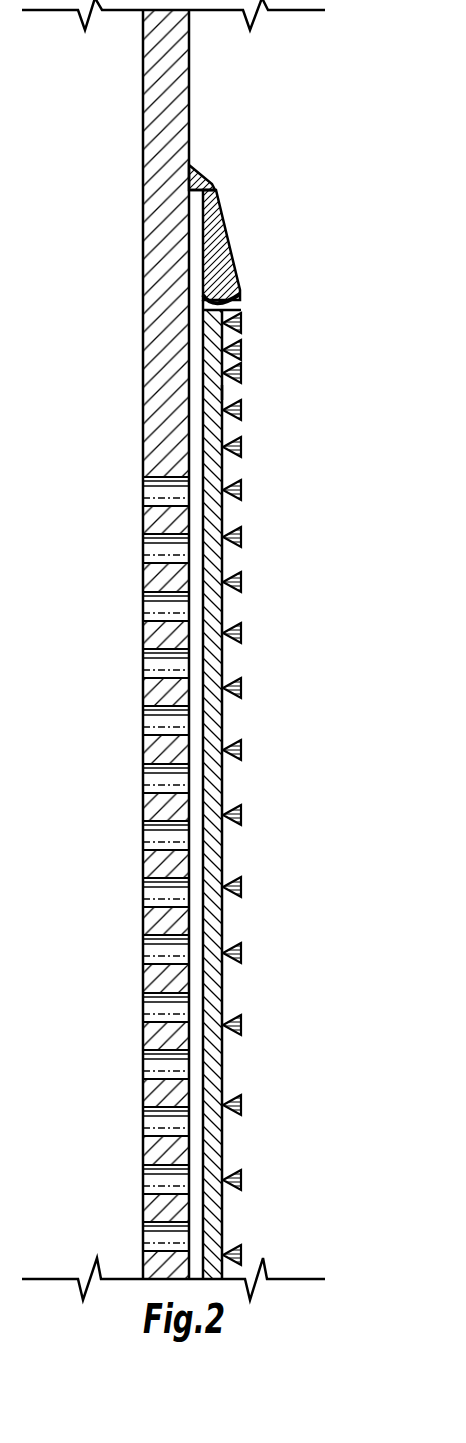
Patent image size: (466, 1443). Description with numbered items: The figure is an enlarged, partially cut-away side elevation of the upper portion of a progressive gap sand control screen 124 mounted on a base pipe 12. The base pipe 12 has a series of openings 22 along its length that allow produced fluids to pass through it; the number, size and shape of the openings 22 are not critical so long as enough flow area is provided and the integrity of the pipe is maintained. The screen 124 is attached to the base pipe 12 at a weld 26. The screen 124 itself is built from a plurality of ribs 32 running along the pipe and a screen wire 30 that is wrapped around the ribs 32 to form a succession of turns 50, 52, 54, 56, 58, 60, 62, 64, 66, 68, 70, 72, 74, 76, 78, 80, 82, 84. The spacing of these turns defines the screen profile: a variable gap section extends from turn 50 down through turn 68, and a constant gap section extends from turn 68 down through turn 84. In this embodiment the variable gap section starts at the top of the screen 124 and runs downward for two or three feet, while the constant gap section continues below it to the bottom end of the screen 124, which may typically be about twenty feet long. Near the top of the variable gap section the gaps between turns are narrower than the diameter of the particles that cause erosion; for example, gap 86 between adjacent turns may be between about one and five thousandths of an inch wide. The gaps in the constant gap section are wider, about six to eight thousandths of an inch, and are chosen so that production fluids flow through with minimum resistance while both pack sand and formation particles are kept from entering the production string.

The base pipe 12 is at (189, 66).
The openings 22 is at (146, 495).
The weld 26 is at (199, 174).
The progressive gap sand control screen 124 is at (230, 247).
The screen wire 30 is at (303, 777).
The ribs 32 is at (222, 917).
The turn 50 is at (241, 323).
The turn 52 is at (241, 349).
The turn 54 is at (241, 377).
The turn 56 is at (241, 411).
The turn 58 is at (241, 451).
The turn 60 is at (241, 491).
The turn 62 is at (241, 538).
The turn 64 is at (241, 583).
The turn 66 is at (241, 633).
The turn 68 is at (241, 689).
The turn 70 is at (241, 750).
The turn 72 is at (241, 816).
The turn 74 is at (241, 888).
The turn 76 is at (241, 954).
The turn 78 is at (241, 1027).
The turn 80 is at (241, 1105).
The turn 82 is at (241, 1181).
The turn 84 is at (241, 1254).
The gap 86 is at (242, 393).